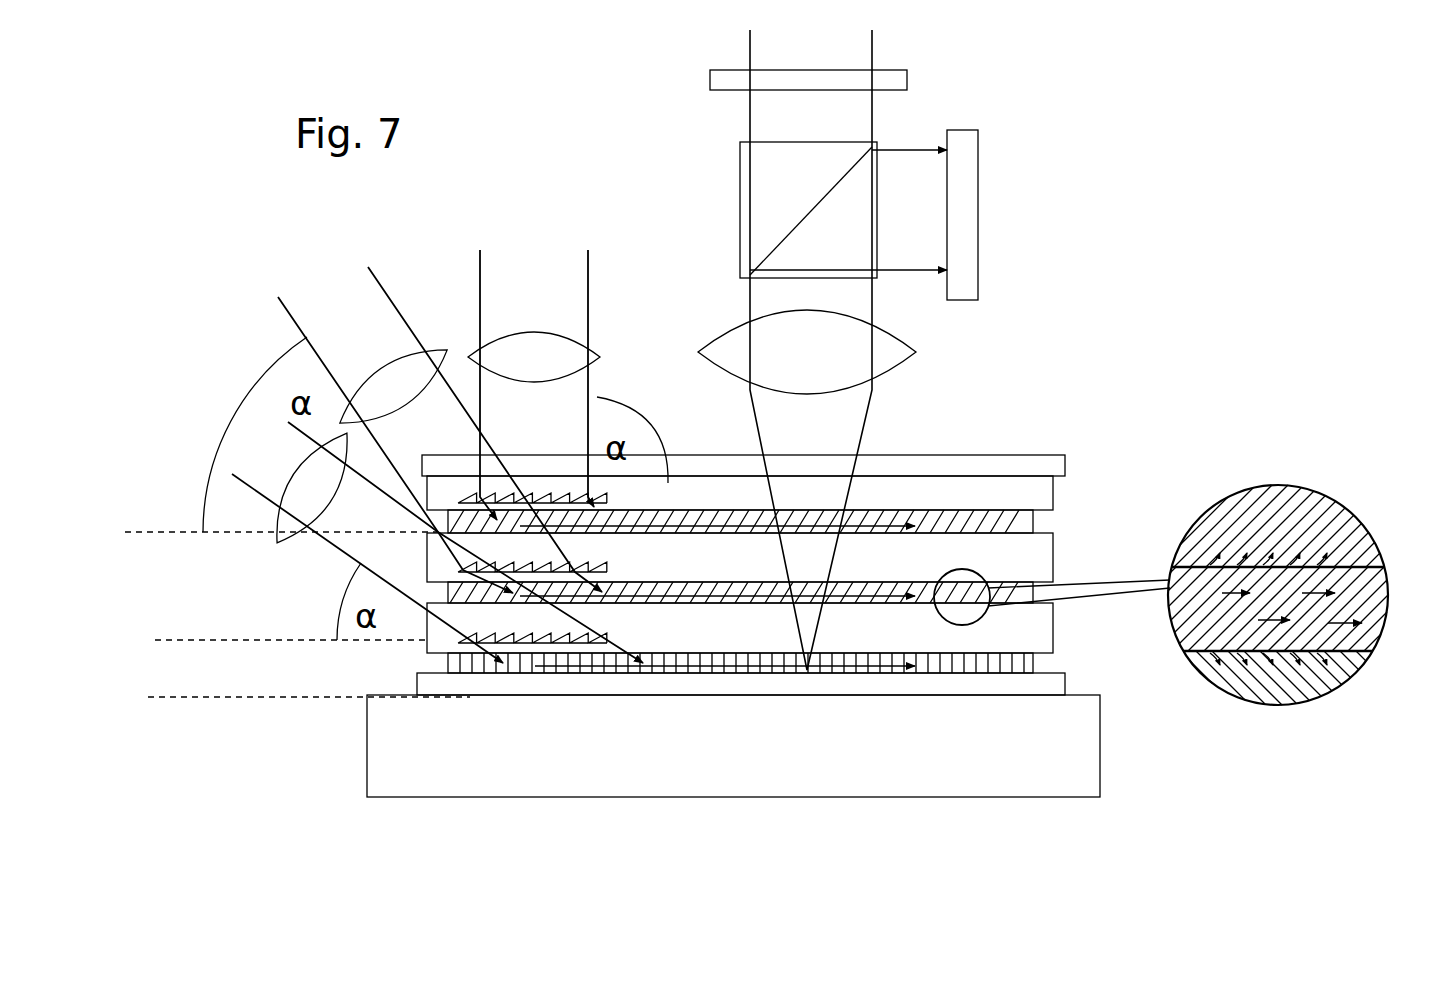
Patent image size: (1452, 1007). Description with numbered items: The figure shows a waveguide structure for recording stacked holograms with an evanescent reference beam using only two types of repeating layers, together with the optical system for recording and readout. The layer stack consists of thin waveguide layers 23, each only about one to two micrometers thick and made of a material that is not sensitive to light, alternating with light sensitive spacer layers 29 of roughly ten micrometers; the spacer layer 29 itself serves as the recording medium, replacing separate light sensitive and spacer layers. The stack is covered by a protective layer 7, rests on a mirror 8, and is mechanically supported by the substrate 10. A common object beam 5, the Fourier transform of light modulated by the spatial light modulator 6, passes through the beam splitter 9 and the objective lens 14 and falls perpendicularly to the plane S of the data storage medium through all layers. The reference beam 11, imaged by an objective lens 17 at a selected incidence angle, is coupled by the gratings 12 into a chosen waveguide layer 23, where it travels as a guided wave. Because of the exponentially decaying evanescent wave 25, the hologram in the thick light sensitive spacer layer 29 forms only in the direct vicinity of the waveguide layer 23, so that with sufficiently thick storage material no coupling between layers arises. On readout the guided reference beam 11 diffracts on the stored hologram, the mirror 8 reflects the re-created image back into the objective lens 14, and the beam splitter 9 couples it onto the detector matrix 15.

The object beam 5 is at (863, 435).
The spatial light modulator 6 is at (907, 82).
The protective layer 7 is at (1018, 463).
The mirror 8 is at (997, 687).
The beam splitter 9 is at (740, 152).
The substrate 10 is at (940, 780).
The reference beam 11 is at (597, 293).
The grating 12 is at (548, 487).
The objective lens 14 is at (877, 360).
The detector matrix 15 is at (970, 228).
The objective lens 17 is at (410, 375).
The waveguide layer 23 is at (958, 490).
The evanescent wave 25 is at (1337, 583).
The light sensitive spacer layer 29 is at (1045, 562).
The plane of the data storage medium S is at (290, 697).